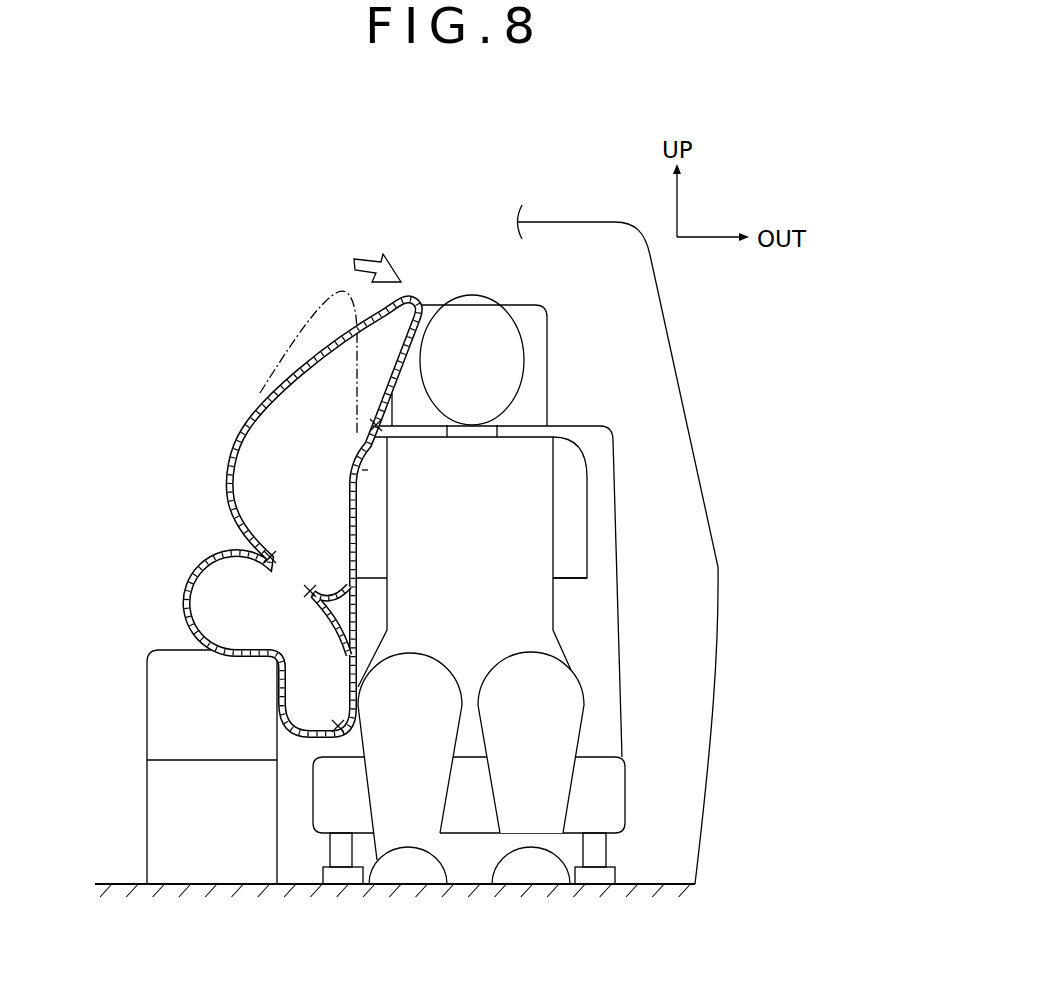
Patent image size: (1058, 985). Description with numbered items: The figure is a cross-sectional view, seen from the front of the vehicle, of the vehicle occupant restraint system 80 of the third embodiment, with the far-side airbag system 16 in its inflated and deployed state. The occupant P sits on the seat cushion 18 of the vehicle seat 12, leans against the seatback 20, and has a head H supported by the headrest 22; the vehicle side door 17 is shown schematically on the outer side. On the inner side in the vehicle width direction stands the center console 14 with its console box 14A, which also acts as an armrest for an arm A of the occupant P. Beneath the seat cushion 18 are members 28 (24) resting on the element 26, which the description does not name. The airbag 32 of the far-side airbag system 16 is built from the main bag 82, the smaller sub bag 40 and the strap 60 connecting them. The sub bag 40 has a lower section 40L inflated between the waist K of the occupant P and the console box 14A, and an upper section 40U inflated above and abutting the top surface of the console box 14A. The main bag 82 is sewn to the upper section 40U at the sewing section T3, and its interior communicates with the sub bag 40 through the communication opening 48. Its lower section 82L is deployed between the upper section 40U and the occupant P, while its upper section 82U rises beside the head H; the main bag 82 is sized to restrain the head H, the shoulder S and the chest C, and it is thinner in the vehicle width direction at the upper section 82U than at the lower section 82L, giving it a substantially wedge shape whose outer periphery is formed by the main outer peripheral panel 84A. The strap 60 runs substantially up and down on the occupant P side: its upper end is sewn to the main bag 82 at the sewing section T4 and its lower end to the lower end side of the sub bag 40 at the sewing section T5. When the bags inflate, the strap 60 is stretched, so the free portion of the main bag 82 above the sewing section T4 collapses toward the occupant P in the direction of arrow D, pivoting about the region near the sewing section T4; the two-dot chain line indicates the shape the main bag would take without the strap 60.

The vehicle occupant restraint system 80 is at (275, 421).
The far-side airbag system 16 is at (318, 274).
The main bag 82 is at (275, 516).
The upper section 82U is at (330, 343).
The lower section 82L is at (358, 557).
The main outer peripheral panel 84A is at (232, 450).
The far-side airbag 32 is at (230, 487).
The sub bag 40 is at (210, 639).
The upper section 40U is at (186, 604).
The lower section 40L is at (282, 690).
The communication opening 48 is at (304, 592).
The strap 60 is at (358, 615).
The vehicle seat 12 is at (503, 633).
The seatback 20 is at (518, 591).
The headrest 22 is at (548, 377).
The seat cushion 18 is at (622, 794).
The seat leg 24 is at (594, 878).
The slide rail 28 is at (342, 878).
The vehicle floor 26 is at (200, 882).
The center console 14 is at (173, 767).
The console box 14A is at (146, 690).
The vehicle side door 17 is at (719, 561).
The head H is at (525, 342).
The occupant P is at (588, 496).
The chest C is at (522, 542).
The arm A is at (588, 566).
The waist K is at (585, 700).
The shoulder S is at (368, 468).
The arrow D is at (376, 257).
The sewing section T3 is at (272, 553).
The sewing section T4 is at (374, 421).
The sewing section T5 is at (345, 724).